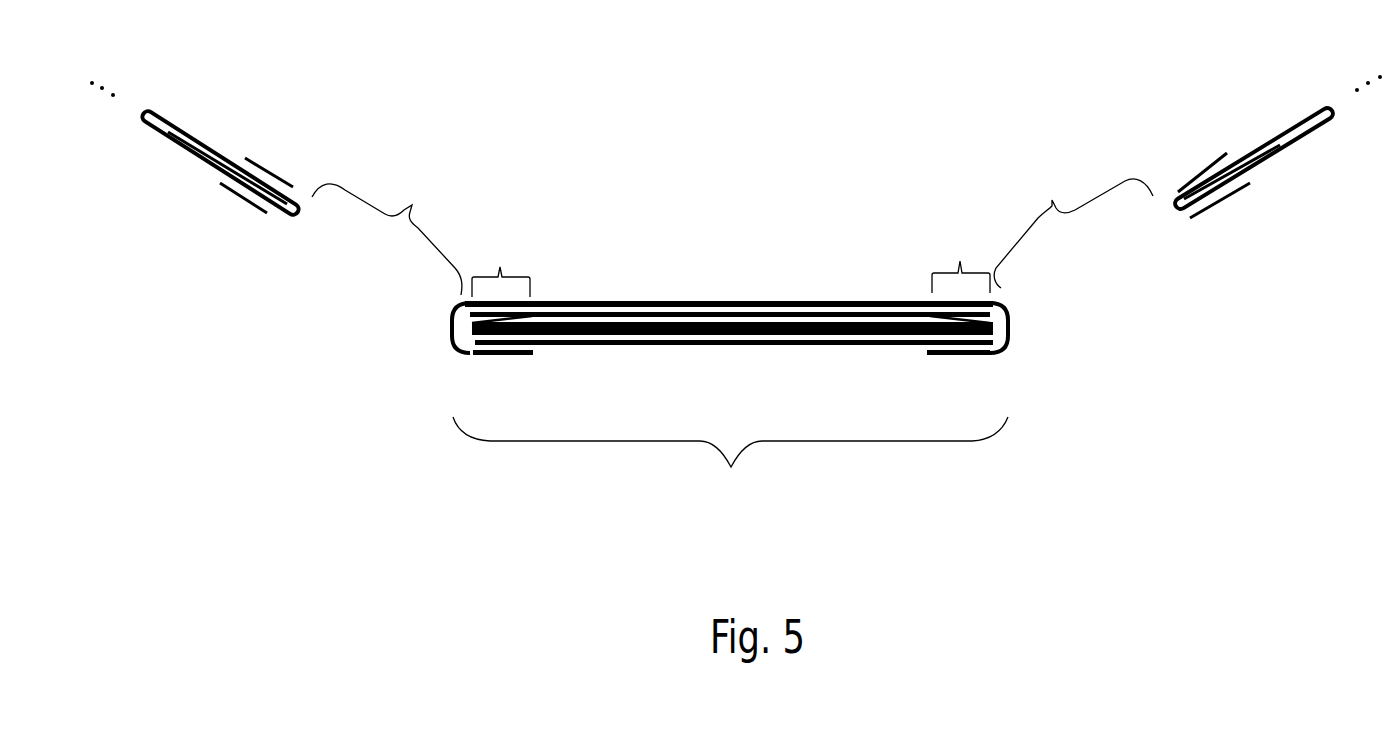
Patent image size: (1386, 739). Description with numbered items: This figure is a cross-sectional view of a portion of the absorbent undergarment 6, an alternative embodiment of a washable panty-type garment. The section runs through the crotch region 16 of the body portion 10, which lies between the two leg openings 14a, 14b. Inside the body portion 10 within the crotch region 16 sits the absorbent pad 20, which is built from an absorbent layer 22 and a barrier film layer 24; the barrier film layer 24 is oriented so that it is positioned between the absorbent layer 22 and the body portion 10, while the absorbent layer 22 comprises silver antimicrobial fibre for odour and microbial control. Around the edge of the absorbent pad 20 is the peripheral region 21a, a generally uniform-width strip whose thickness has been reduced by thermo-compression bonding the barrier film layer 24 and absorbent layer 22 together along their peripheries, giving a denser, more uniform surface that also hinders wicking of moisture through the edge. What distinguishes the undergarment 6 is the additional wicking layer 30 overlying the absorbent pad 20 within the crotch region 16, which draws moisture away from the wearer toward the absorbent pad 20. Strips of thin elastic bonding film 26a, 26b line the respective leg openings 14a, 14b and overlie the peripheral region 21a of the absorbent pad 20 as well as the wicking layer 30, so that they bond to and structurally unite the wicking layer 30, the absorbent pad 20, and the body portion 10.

The absorbent undergarment 6 is at (331, 116).
The body portion 10 is at (205, 164).
The leg opening 14a is at (387, 235).
The leg opening 14b is at (1073, 228).
The crotch region 16 is at (730, 335).
The absorbent pad 20 is at (650, 303).
The peripheral region 21a is at (732, 273).
The absorbent layer 22 is at (785, 302).
The barrier film layer 24 is at (864, 315).
The elastic bonding film 26a is at (260, 222).
The elastic bonding film 26b is at (1172, 224).
The wicking layer 30 is at (700, 305).